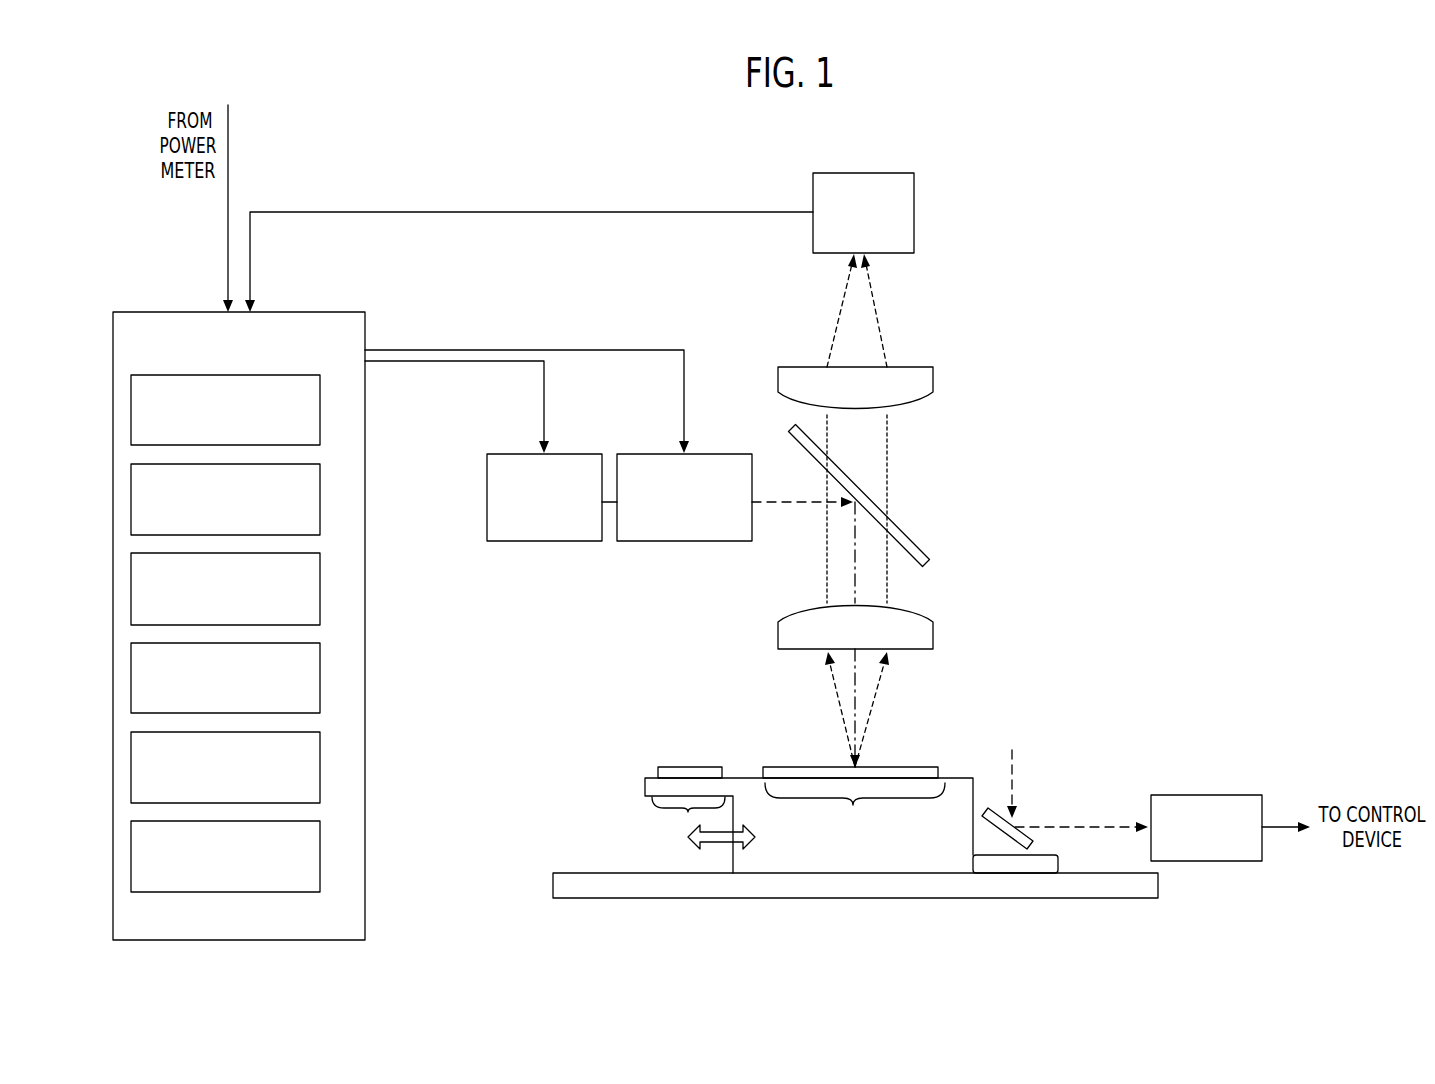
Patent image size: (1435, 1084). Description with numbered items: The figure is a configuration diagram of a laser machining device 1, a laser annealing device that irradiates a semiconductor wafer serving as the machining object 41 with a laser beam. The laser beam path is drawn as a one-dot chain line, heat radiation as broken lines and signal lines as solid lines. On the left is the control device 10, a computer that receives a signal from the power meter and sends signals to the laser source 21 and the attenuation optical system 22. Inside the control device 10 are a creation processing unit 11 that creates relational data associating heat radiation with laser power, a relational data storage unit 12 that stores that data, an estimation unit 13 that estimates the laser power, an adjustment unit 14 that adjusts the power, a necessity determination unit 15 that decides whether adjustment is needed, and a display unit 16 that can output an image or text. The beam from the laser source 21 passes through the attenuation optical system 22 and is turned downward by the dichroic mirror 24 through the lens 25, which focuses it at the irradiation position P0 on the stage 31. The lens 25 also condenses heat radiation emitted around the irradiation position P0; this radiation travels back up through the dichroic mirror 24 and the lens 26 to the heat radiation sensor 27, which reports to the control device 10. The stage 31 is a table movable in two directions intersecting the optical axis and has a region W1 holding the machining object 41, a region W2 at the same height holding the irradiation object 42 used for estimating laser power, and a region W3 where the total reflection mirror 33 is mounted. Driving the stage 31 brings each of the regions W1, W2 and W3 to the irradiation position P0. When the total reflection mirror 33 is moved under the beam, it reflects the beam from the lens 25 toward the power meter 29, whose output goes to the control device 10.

The laser machining device 1 is at (1110, 208).
The control device 10 is at (338, 310).
The creation processing unit 11 is at (322, 408).
The relational data storage unit 12 is at (322, 497).
The estimation unit 13 is at (322, 588).
The adjustment unit 14 is at (322, 676).
The necessity determination unit 15 is at (322, 765).
The display unit 16 is at (322, 853).
The laser source 21 is at (577, 453).
The attenuation optical system 22 is at (715, 453).
The dichroic mirror 24 is at (912, 537).
The lens 25 is at (933, 627).
The lens 26 is at (917, 367).
The heat radiation sensor 27 is at (899, 173).
The power meter 29 is at (1222, 793).
The stage 31 is at (960, 777).
The total reflection mirror 33 is at (1032, 847).
The machining object 41 is at (902, 767).
The irradiation object 42 is at (697, 767).
The irradiation position P0 is at (851, 765).
The region W1 is at (855, 811).
The region W2 is at (689, 809).
The region W3 is at (1015, 874).